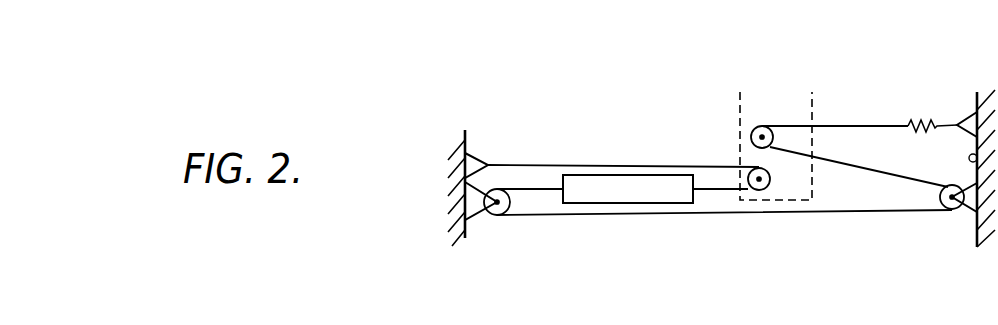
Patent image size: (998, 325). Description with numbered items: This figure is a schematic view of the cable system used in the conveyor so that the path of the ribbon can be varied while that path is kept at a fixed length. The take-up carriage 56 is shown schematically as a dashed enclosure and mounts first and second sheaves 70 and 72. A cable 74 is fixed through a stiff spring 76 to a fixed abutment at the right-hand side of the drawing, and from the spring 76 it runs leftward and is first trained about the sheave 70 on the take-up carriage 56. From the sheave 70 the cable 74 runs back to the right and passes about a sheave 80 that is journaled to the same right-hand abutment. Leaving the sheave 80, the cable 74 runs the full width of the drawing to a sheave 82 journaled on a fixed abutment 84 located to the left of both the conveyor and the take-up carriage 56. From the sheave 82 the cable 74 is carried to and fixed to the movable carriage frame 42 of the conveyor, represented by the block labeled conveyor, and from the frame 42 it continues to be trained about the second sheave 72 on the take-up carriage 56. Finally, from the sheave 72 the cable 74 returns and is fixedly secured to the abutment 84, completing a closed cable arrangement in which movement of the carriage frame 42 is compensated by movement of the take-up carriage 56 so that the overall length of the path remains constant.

The movable carriage frame 42 is at (603, 175).
The take-up carriage 56 is at (736, 99).
The first sheave 70 is at (751, 137).
The second sheave 72 is at (762, 191).
The cable 74 is at (834, 125).
The stiff spring 76 is at (907, 127).
The sheave 80 is at (947, 209).
The sheave 82 is at (499, 213).
The fixed abutment 84 is at (467, 152).